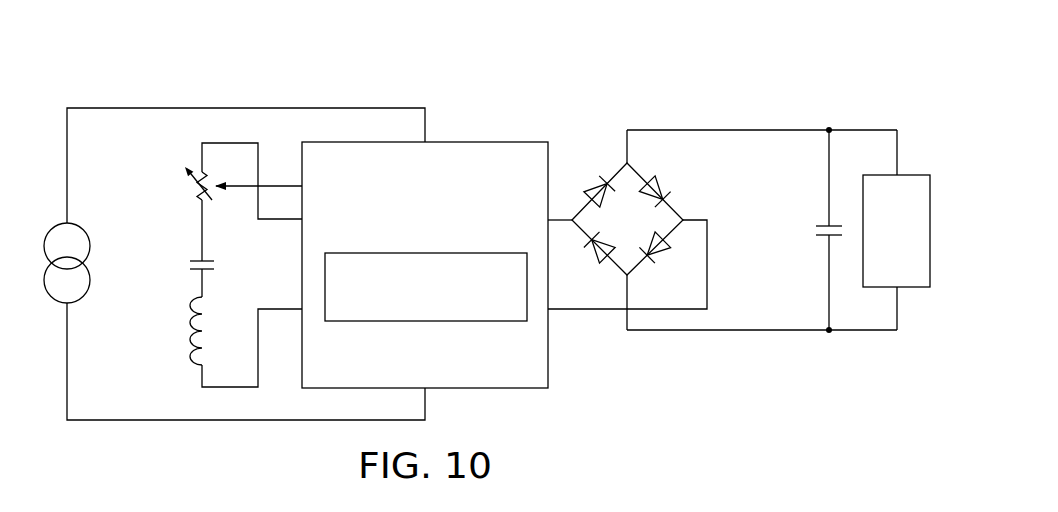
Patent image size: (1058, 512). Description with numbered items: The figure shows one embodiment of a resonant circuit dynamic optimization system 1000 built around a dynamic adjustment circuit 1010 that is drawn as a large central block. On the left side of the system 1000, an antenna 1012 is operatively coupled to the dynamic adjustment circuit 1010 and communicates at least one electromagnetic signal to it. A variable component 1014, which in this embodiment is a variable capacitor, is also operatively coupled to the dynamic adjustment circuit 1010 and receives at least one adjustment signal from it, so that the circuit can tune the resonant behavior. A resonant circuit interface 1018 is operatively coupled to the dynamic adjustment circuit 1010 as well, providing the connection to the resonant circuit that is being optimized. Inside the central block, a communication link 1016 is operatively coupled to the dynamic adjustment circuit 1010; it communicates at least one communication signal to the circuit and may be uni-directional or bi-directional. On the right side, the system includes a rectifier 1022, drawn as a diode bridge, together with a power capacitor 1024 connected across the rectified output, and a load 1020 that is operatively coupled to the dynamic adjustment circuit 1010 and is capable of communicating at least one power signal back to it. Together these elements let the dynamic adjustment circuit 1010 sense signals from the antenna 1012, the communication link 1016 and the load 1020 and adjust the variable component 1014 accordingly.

The resonant circuit dynamic optimization system 1000 is at (764, 59).
The dynamic adjustment circuit 1010 is at (453, 142).
The antenna 1012 is at (90, 247).
The variable component 1014 is at (187, 337).
The communication link 1016 is at (427, 322).
The resonant circuit interface 1018 is at (278, 220).
The load 1020 is at (913, 175).
The rectifier 1022 is at (612, 164).
The power capacitor 1024 is at (815, 229).